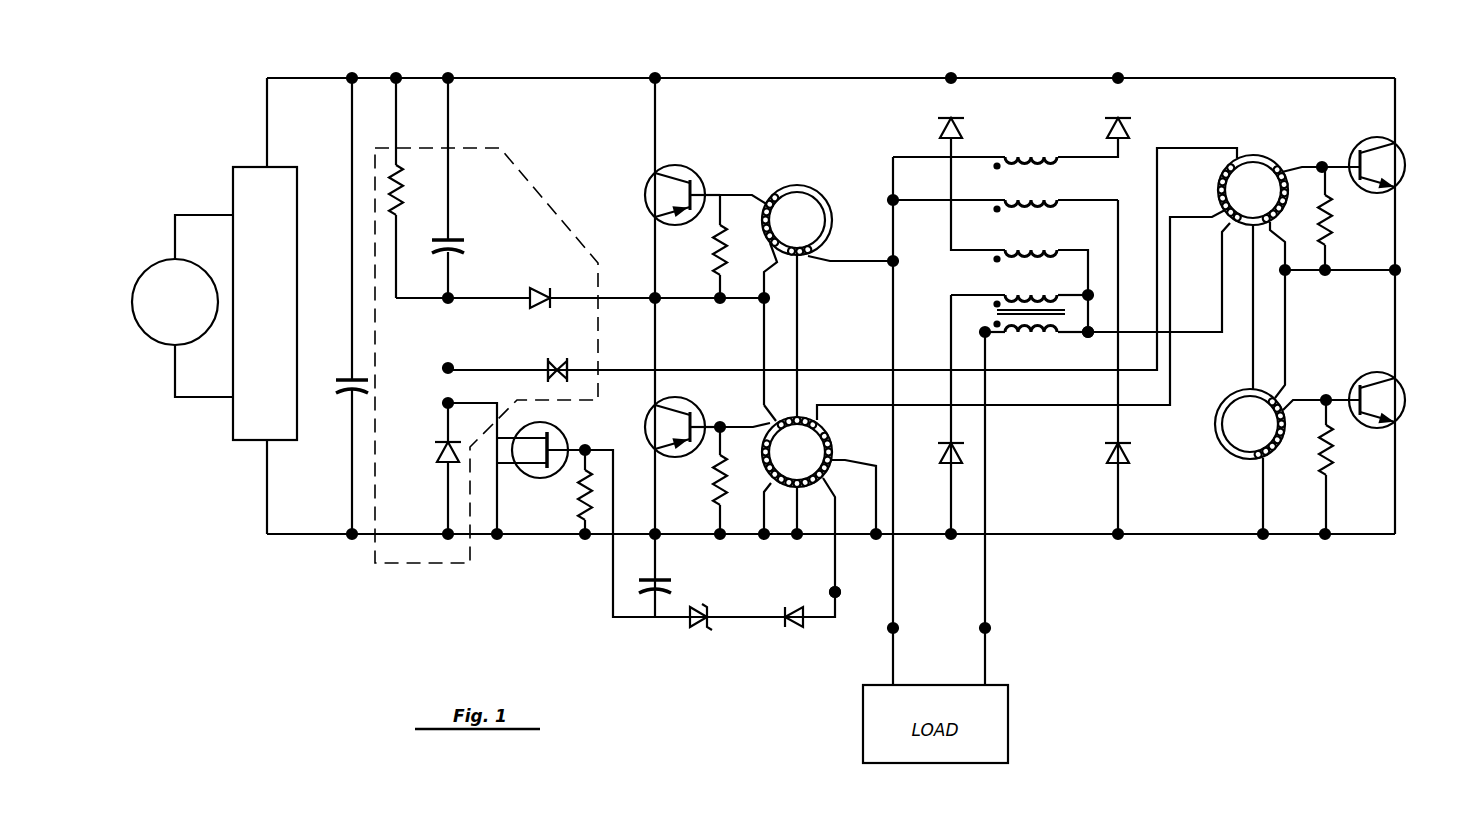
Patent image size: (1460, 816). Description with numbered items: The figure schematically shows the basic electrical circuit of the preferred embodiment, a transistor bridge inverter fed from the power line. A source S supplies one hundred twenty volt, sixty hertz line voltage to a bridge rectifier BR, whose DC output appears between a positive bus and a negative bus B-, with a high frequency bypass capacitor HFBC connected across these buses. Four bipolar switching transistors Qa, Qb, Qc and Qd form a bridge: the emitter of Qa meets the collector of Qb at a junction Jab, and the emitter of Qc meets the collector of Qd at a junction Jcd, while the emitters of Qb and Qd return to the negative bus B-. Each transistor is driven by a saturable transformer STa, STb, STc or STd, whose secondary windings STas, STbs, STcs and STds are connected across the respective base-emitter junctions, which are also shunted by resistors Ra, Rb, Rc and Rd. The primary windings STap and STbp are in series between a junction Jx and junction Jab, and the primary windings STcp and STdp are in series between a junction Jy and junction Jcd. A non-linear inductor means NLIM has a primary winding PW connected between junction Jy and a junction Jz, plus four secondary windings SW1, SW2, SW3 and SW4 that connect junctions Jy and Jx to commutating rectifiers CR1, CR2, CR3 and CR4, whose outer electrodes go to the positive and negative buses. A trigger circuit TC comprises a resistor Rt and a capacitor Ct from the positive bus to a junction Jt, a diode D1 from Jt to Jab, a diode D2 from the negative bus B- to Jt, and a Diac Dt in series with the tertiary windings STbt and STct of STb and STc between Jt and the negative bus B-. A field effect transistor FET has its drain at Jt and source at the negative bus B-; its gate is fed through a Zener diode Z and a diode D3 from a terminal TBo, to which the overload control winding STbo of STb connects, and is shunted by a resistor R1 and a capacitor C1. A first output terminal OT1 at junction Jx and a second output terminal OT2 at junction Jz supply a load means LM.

The B− bus B- is at (317, 540).
The bridge rectifier BR is at (244, 452).
The source S is at (182, 306).
The high frequency bypass capacitor HFBC is at (342, 393).
The trigger circuit TC is at (508, 146).
The resistor Rt is at (399, 194).
The capacitor Ct is at (452, 238).
The junction Jt is at (442, 300).
The diode D1 is at (538, 290).
The Diac Dt is at (556, 362).
The diode D2 is at (440, 455).
The field effect transistor FET is at (567, 438).
The resistor R1 is at (583, 483).
The junction Jab is at (652, 295).
The bipolar switching transistor Qa is at (645, 185).
The resistor Ra is at (716, 228).
The saturable transformer STa is at (815, 182).
The secondary winding STas is at (758, 222).
The primary winding STap is at (800, 258).
The junction Jx is at (893, 258).
The bipolar switching transistor Qb is at (645, 420).
The resistor Rb is at (716, 462).
The saturable transformer STb is at (840, 482).
The primary winding STbp is at (782, 410).
The tertiary winding STbt is at (832, 441).
The secondary winding STbs is at (768, 480).
The overload control winding STbo is at (812, 488).
The capacitor C1 is at (660, 575).
The Zener diode Z is at (695, 626).
The diode D3 is at (791, 626).
The terminal TBo is at (835, 600).
The first commutating rectifier CR1 is at (940, 455).
The second commutating rectifier CR2 is at (940, 130).
The third commutating rectifier CR3 is at (1112, 455).
The fourth commutating rectifier CR4 is at (1125, 130).
The non-linear inductor means NLIM is at (988, 308).
The first secondary winding SW1 is at (1022, 292).
The second secondary winding SW2 is at (1030, 250).
The third secondary winding SW3 is at (1030, 200).
The fourth secondary winding SW4 is at (1030, 157).
The primary winding PW is at (1030, 340).
The junction Jz is at (986, 338).
The junction Jy is at (1090, 338).
The first output terminal OT1 is at (896, 628).
The second output terminal OT2 is at (990, 628).
The load means LM is at (1016, 728).
The saturable transformer STc is at (1268, 156).
The tertiary winding STct is at (1222, 192).
The secondary winding STcs is at (1290, 218).
The primary winding STcp is at (1243, 232).
The bipolar switching transistor Qc is at (1353, 146).
The resistor Rc is at (1330, 206).
The junction Jcd is at (1399, 269).
The saturable transformer STd is at (1226, 462).
The primary winding STdp is at (1268, 392).
The secondary winding STds is at (1286, 447).
The bipolar switching transistor Qd is at (1356, 380).
The resistor Rd is at (1332, 448).